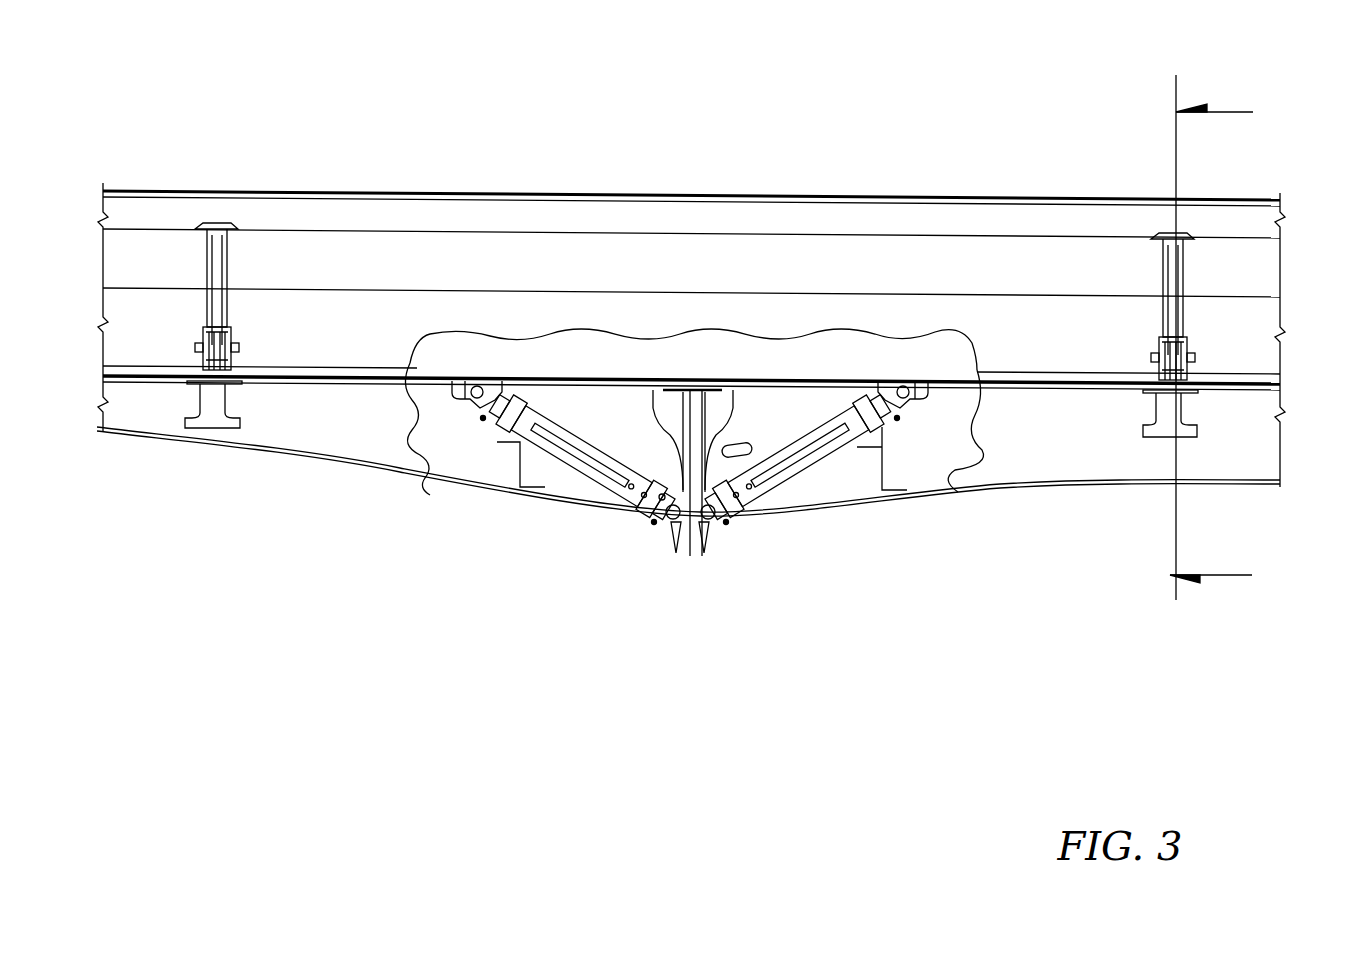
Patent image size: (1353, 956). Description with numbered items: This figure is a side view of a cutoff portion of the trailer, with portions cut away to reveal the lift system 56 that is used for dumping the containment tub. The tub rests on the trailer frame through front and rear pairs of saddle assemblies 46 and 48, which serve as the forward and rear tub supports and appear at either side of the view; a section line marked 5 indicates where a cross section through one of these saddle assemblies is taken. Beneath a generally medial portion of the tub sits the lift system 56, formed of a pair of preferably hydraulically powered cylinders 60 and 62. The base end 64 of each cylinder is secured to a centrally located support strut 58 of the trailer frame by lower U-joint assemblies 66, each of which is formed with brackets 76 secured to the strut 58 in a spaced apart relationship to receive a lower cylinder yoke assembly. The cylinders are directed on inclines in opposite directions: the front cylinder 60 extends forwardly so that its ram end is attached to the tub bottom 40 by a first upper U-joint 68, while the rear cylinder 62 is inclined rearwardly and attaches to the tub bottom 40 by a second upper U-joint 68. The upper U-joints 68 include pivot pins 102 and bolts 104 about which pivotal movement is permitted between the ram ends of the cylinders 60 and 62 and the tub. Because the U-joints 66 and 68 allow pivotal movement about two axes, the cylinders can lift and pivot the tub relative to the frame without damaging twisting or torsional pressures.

The section line 5- 5 is at (1222, 337).
The bottom portion 40 is at (553, 495).
The front saddle assembly 46 is at (1180, 395).
The rear saddle assembly 48 is at (213, 385).
The lift system 56 is at (597, 522).
The support strut 58 is at (733, 405).
The front cylinder 60 is at (800, 470).
The rear cylinder 62 is at (582, 470).
The base end 64 is at (660, 505).
The lower U-joint assembly 66 is at (703, 545).
The upper U-joint 68 is at (470, 400).
The brackets 76 is at (690, 545).
The pivot pins 102 is at (475, 396).
The bolts 104 is at (482, 415).